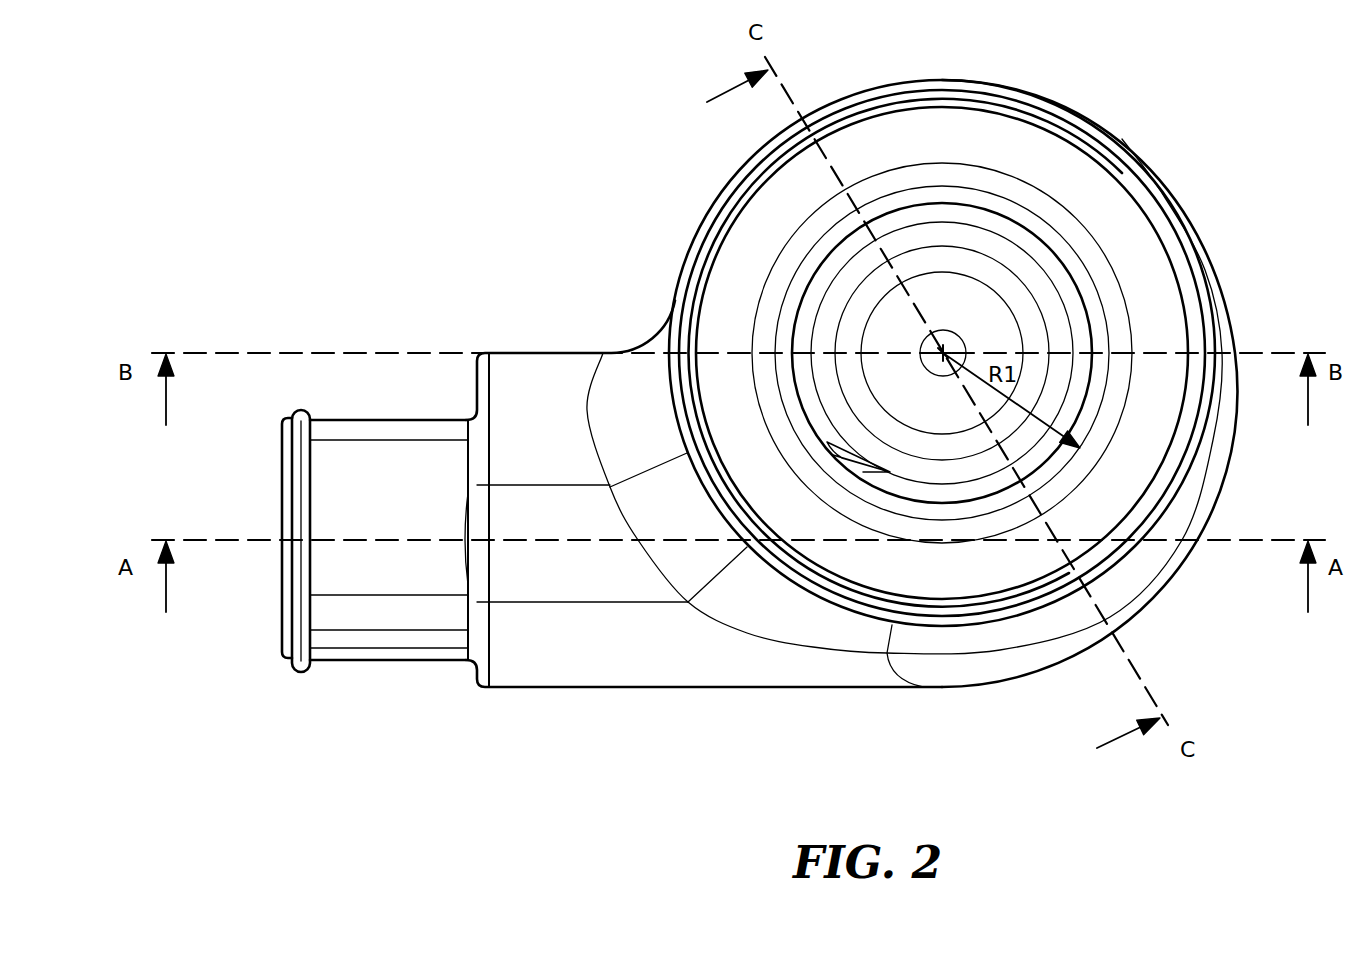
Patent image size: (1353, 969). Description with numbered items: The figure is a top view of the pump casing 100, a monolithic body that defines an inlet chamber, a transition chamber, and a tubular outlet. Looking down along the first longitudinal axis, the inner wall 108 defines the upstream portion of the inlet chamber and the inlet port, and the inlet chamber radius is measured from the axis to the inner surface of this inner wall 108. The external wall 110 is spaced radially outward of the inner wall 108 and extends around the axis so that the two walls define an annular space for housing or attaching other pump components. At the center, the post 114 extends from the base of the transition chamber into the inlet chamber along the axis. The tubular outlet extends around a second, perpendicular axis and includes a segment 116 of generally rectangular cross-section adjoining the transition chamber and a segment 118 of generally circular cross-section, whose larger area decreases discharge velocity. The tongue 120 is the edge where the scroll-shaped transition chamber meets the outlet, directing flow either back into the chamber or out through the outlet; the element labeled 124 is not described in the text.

The pump casing 100 is at (505, 135).
The inner wall 108 is at (1057, 213).
The external wall 110 is at (932, 85).
The post 114 is at (950, 335).
The segment of generally rectangular cross-sectional shape 116 is at (557, 688).
The segment of generally circular cross-sectional shape 118 is at (368, 661).
The tongue 120 is at (863, 472).
The flange 124 is at (281, 480).